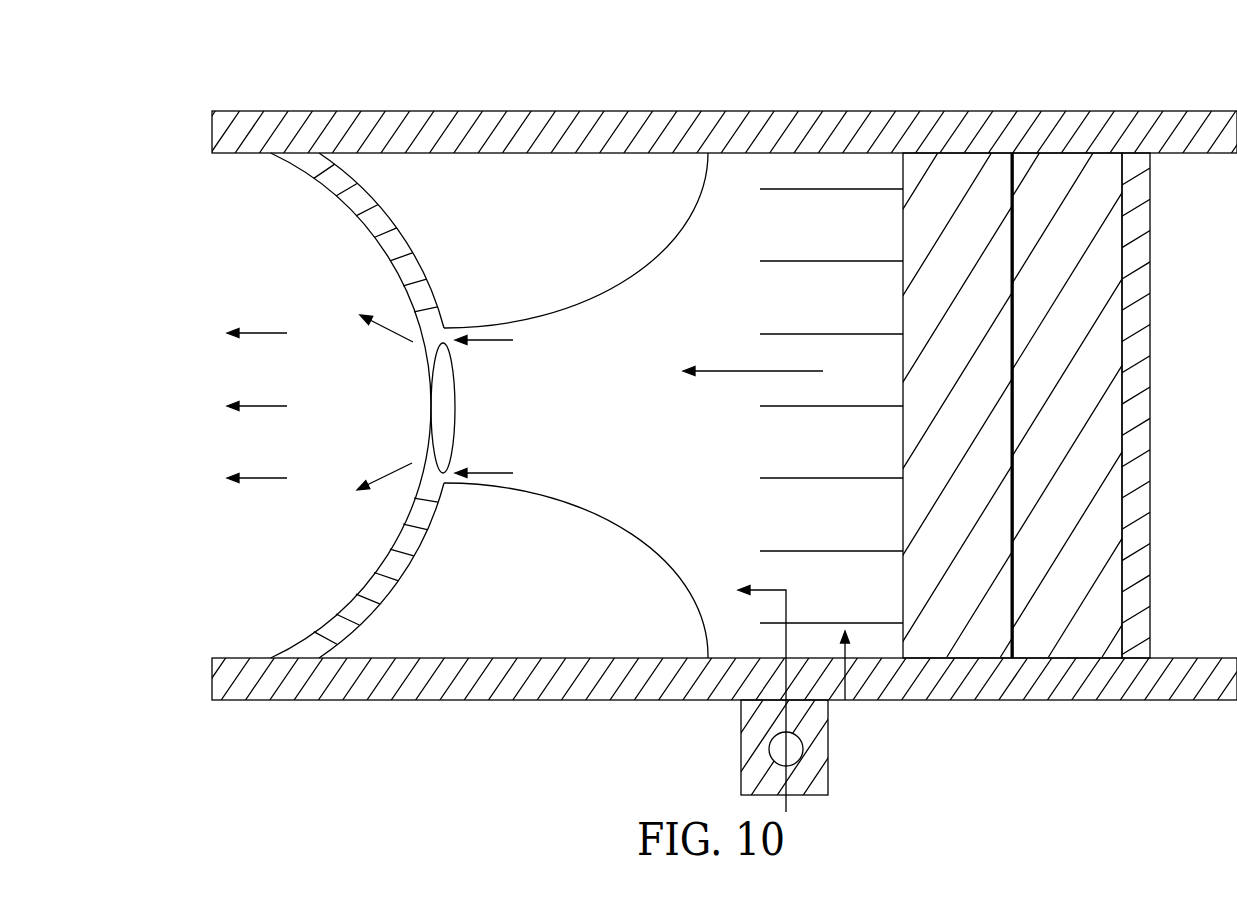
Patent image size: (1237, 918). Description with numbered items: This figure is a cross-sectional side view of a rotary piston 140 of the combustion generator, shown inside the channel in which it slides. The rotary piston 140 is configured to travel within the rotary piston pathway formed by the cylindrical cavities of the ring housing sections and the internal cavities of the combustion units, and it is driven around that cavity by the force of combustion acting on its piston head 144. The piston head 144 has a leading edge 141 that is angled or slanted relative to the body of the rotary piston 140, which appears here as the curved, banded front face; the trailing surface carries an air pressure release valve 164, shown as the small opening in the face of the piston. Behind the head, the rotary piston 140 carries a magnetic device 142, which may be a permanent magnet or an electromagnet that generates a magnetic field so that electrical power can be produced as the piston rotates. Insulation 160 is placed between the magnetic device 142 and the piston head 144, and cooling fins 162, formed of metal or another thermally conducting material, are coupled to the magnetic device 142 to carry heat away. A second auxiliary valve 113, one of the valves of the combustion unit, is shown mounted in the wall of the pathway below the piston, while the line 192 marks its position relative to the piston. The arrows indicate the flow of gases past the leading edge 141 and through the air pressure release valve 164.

The rotary piston 140 is at (206, 104).
The leading edge 141 is at (320, 199).
The magnetic device 142 is at (963, 143).
The piston head 144 is at (1140, 142).
The insulation 160 is at (1062, 167).
The cooling fins 162 is at (845, 700).
The air pressure release valve 164 is at (420, 408).
The second auxiliary valve 113 is at (726, 751).
The sensor axis line 192 is at (788, 803).